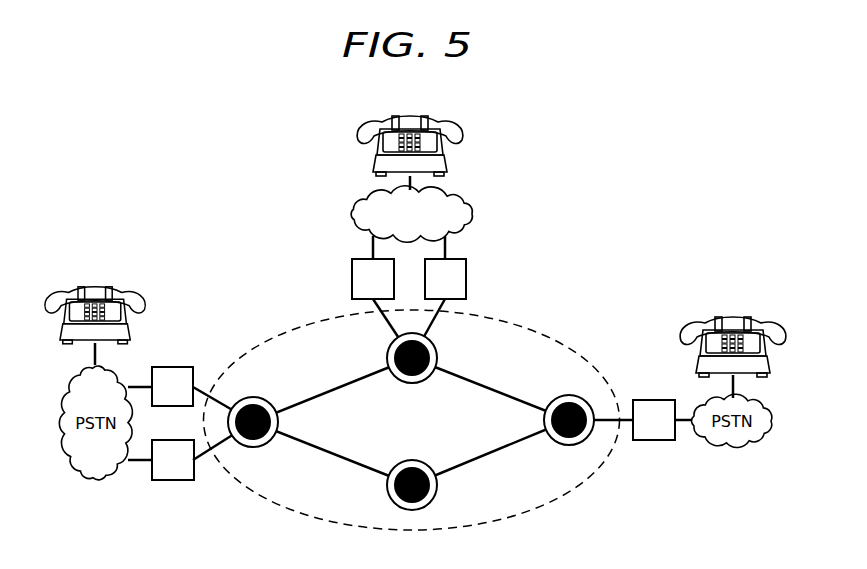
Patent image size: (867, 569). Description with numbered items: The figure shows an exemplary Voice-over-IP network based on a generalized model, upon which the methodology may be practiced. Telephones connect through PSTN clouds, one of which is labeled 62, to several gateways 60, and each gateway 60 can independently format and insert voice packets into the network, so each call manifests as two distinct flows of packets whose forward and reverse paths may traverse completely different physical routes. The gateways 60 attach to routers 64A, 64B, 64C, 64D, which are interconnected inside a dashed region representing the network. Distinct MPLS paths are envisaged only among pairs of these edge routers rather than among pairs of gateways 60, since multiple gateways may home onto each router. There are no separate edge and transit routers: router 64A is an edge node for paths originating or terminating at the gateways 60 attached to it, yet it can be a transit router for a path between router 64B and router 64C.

The gateway 60 is at (351, 279).
The PSTN network 62 is at (351, 213).
The router 64A is at (279, 421).
The router 64B is at (411, 385).
The router 64C is at (419, 462).
The router 64D is at (546, 420).